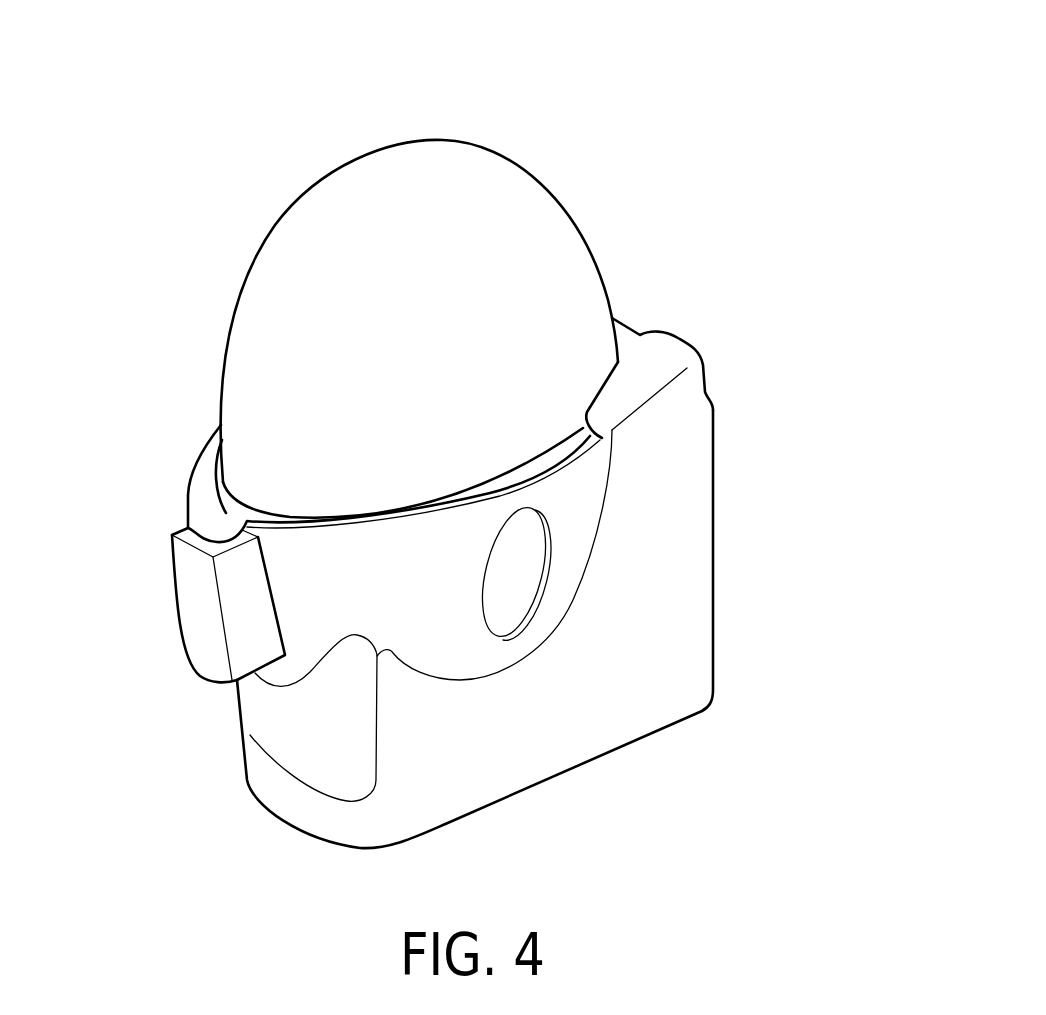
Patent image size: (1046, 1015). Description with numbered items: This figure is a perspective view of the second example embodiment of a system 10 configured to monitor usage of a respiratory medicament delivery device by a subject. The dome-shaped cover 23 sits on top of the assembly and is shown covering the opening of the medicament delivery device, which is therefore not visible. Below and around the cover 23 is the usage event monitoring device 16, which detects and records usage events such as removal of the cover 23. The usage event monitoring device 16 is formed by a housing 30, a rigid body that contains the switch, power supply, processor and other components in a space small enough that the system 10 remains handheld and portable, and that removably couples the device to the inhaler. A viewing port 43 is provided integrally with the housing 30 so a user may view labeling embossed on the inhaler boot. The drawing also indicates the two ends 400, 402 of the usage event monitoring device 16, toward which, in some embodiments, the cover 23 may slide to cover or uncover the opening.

The system 10 is at (140, 177).
The cover 23 is at (442, 138).
The usage event monitoring device 16 is at (717, 341).
The end 402 is at (784, 436).
The housing 30 is at (713, 545).
The viewing port 43 is at (503, 579).
The end 400 is at (176, 739).